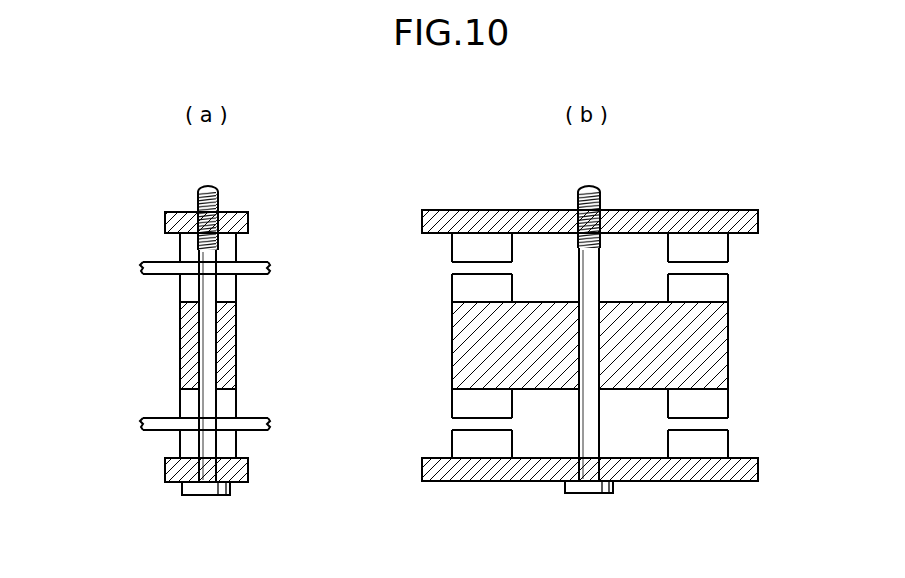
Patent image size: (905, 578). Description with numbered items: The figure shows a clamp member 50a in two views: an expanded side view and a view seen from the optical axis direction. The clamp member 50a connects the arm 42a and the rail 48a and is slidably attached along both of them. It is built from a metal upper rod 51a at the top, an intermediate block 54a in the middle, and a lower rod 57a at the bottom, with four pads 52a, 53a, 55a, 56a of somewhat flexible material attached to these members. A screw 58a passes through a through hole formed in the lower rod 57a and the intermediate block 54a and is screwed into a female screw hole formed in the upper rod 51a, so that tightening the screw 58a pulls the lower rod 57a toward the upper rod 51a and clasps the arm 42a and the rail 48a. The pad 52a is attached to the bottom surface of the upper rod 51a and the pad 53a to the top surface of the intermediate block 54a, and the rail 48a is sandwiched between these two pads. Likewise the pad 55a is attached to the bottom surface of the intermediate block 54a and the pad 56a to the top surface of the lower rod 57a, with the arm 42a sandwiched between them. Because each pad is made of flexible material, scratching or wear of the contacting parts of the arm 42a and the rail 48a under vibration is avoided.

The clamp member 50a is at (121, 200).
The upper rod 51a is at (232, 213).
The pad 52a is at (228, 248).
The rail 48a is at (140, 266).
The pad 53a is at (228, 289).
The intermediate block 54a is at (228, 350).
The pad 55a is at (227, 403).
The arm 42a is at (140, 426).
The pad 56a is at (227, 447).
The lower rod 57a is at (245, 470).
The screw 58a is at (207, 496).